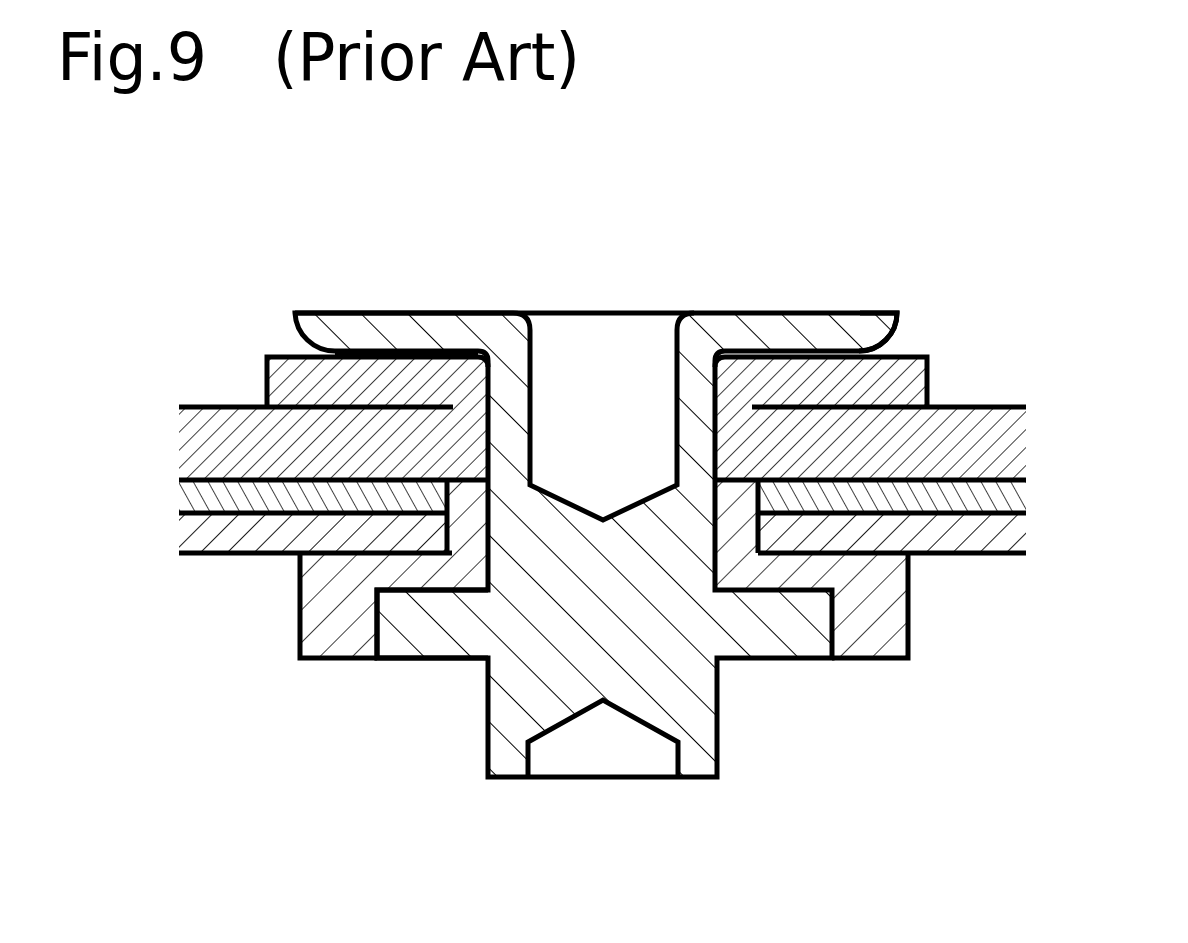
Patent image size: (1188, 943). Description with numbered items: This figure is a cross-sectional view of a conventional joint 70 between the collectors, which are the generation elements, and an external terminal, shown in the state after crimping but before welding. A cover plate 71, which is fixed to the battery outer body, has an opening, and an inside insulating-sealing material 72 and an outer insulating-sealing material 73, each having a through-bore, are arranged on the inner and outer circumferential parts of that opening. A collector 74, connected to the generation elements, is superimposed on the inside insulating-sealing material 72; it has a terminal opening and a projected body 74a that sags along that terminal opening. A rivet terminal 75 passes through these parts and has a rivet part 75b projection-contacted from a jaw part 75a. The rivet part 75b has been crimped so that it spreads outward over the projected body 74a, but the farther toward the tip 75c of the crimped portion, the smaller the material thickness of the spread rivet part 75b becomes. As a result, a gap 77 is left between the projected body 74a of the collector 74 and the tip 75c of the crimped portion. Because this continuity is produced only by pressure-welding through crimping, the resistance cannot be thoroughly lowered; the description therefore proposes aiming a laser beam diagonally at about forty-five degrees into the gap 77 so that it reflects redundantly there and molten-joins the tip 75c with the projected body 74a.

The joint 70 is at (117, 242).
The cover plate 71 is at (958, 525).
The inside insulating-sealing material 72 is at (992, 497).
The outer insulating-sealing material 73 is at (907, 655).
The collector 74 is at (978, 438).
The projected body 74a is at (812, 377).
The rivet terminal 75 is at (527, 695).
The jaw part 75a is at (427, 622).
The rivet part 75b is at (415, 340).
The tip of the crimped portion 75c is at (890, 313).
The gap 77 is at (297, 348).